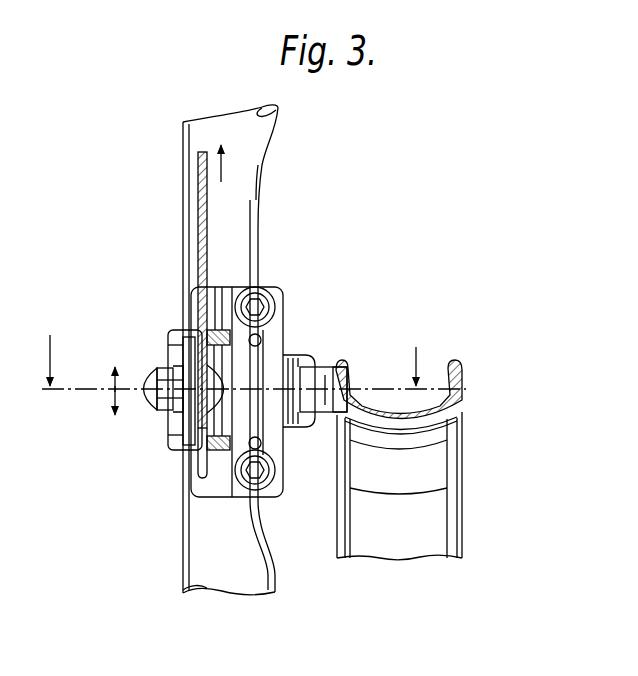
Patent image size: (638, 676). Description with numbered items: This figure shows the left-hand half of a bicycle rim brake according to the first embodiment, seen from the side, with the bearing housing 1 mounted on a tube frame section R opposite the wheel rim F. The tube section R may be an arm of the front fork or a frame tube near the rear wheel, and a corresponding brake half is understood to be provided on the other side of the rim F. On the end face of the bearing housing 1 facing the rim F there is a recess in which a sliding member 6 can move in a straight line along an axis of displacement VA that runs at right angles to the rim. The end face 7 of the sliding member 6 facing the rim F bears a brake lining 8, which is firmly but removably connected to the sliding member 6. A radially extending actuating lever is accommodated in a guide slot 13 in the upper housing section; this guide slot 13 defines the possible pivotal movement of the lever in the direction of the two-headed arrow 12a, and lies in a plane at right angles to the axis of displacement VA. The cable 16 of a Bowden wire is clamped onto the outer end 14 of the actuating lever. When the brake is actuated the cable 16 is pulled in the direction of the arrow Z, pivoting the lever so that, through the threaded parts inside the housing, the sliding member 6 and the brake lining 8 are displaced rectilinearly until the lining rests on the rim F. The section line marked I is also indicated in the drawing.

The tube frame section R is at (183, 138).
The arrow Z is at (222, 171).
The cable 16 is at (200, 205).
The axis of displacement VA is at (267, 368).
The bearing housing 1 is at (172, 437).
The guide slot 13 is at (185, 343).
The outer end of the actuating lever 14 is at (172, 406).
The two-headed arrow 12a is at (114, 397).
The section line I is at (232, 348).
The sliding member 6 is at (297, 428).
The end face of the sliding member 7 is at (301, 358).
The brake lining 8 is at (333, 368).
The wheel rim F is at (466, 381).